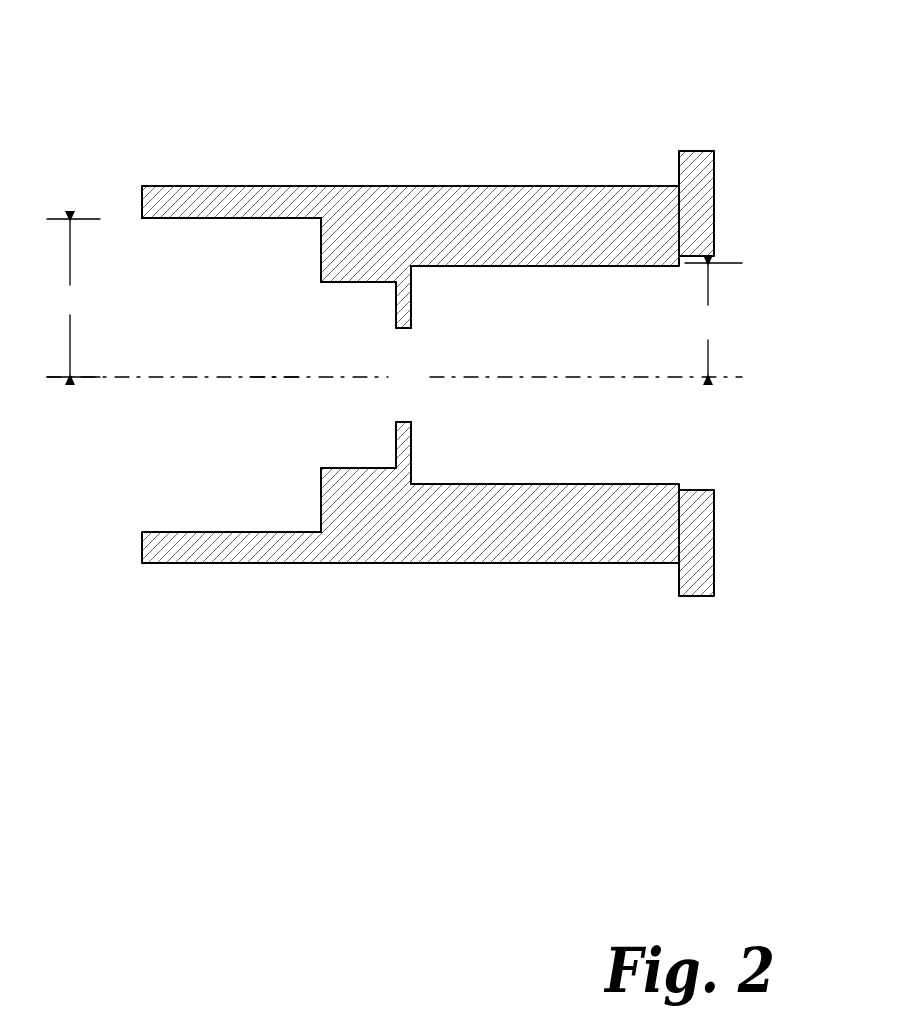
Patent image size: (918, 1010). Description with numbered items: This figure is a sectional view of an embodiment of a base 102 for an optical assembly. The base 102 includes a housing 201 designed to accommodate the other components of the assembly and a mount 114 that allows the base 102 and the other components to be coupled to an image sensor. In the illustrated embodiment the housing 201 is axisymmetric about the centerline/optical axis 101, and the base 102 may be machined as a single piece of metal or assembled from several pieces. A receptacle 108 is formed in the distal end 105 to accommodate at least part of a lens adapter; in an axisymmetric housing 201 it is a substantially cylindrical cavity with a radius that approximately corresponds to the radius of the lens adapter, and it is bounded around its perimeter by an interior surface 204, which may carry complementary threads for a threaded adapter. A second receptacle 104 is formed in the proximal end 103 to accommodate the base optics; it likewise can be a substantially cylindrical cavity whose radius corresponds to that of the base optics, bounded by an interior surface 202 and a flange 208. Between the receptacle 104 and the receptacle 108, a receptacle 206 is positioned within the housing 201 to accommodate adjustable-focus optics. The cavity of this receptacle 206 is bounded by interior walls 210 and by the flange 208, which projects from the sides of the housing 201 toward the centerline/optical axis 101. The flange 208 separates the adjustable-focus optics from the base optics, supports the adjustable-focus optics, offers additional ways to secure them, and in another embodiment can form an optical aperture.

The centerline/optical axis 101 is at (394, 377).
The base 102 is at (584, 58).
The proximal end 103 is at (763, 220).
The receptacle 104 is at (543, 340).
The distal end 105 is at (95, 414).
The receptacle 108 is at (210, 352).
The mount 114 is at (693, 163).
The housing 201 is at (607, 543).
The interior surface 202 is at (578, 268).
The interior surface 204 is at (225, 220).
The receptacle 206 is at (348, 370).
The flange 208 is at (396, 296).
The interior walls 210 is at (373, 283).